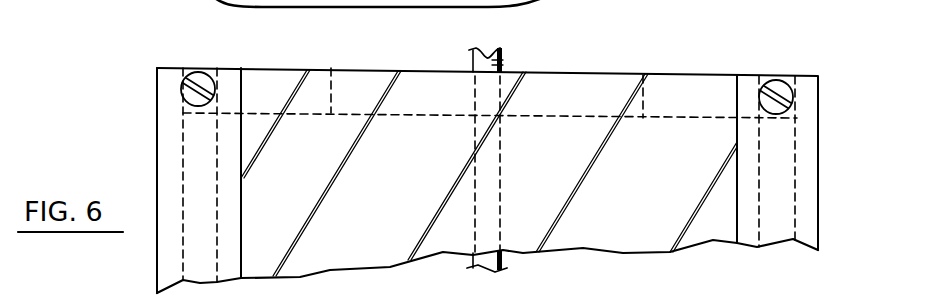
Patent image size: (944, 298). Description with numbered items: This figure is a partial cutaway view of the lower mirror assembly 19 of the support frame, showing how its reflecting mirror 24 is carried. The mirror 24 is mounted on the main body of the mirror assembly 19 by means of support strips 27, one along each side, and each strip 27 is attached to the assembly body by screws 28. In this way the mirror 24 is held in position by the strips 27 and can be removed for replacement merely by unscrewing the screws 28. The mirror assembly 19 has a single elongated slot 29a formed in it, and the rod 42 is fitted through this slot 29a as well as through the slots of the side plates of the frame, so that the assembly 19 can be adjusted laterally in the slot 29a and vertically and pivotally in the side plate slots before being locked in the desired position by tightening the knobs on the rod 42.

The mirror assembly 19 is at (686, 88).
The reflecting mirror 24 is at (489, 173).
The support strip 27 is at (167, 152).
The screw 28 is at (201, 72).
The elongated slot 29a is at (607, 88).
The rod 42 is at (504, 61).